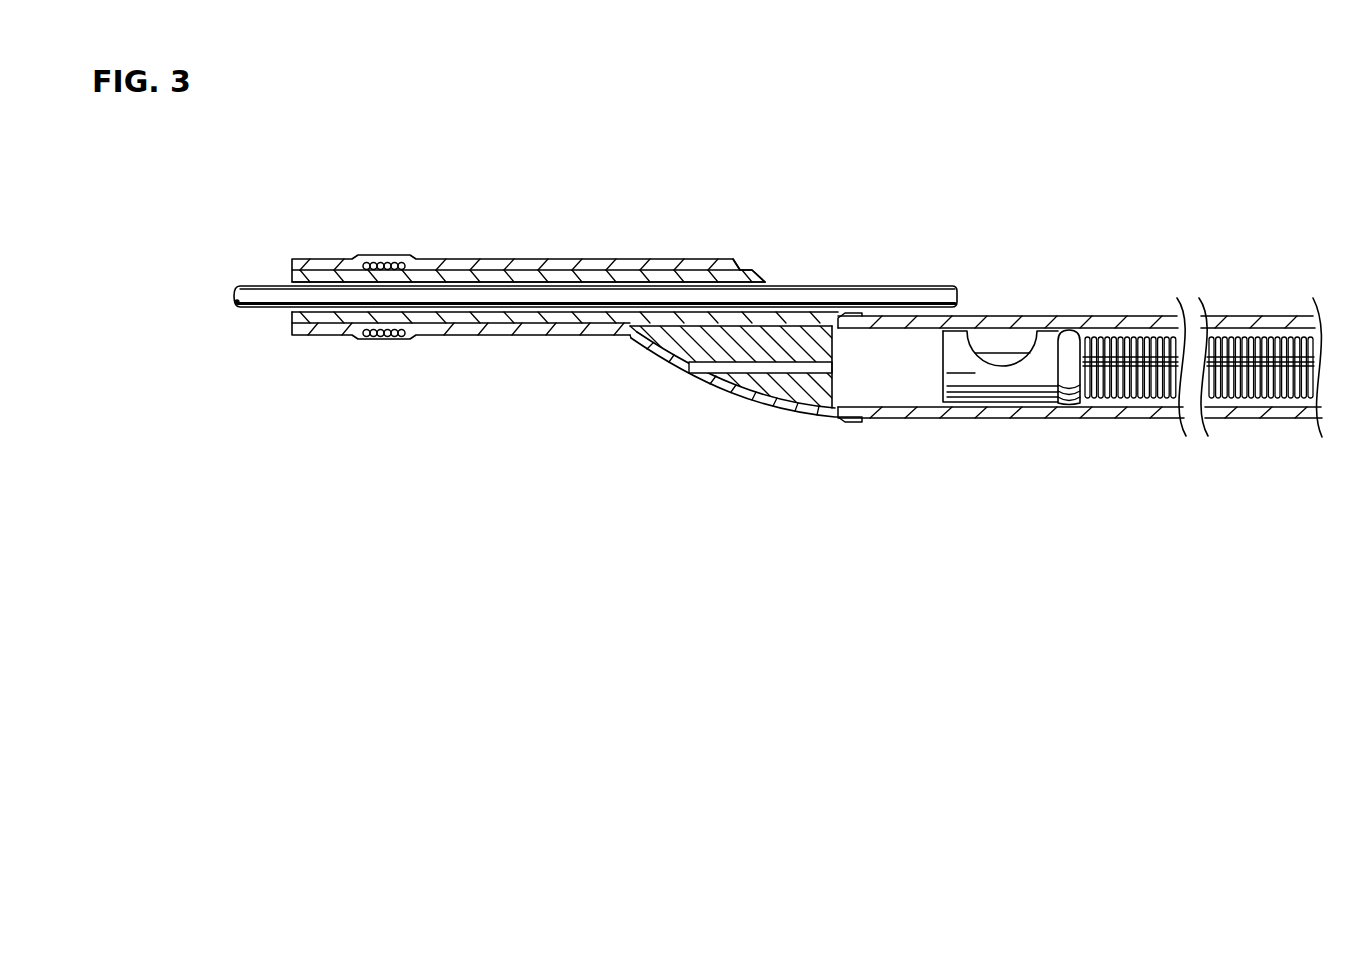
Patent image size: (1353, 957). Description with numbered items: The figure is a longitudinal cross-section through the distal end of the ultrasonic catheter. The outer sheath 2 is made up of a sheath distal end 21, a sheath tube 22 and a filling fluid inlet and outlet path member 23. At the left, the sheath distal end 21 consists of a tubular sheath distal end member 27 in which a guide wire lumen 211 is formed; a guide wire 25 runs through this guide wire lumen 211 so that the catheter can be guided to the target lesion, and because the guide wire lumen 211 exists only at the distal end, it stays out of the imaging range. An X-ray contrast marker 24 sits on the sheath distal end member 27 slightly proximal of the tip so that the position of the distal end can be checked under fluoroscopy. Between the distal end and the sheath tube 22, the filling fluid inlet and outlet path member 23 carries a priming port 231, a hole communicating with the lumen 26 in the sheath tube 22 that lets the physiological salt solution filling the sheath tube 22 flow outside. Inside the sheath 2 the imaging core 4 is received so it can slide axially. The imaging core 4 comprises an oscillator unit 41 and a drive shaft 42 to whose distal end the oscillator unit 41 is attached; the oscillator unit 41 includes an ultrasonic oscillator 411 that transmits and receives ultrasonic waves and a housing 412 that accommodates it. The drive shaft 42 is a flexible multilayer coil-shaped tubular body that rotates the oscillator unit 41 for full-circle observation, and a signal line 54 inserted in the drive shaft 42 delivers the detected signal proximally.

The sheath 2 is at (1080, 325).
The sheath distal end 21 is at (600, 265).
The guide wire lumen 211 is at (540, 314).
The sheath tube 22 is at (1263, 318).
The filling fluid inlet and outlet path member 23 is at (768, 387).
The priming port 231 is at (690, 368).
The X-ray contrast marker 24 is at (373, 262).
The guide wire 25 is at (893, 292).
The lumen 26 is at (904, 396).
The sheath distal end member 27 is at (745, 272).
The imaging core 4 is at (1128, 454).
The oscillator unit 41 is at (1012, 428).
The ultrasonic oscillator 411 is at (1002, 360).
The housing 412 is at (1047, 380).
The drive shaft 42 is at (1198, 432).
The signal line 54 is at (1231, 380).